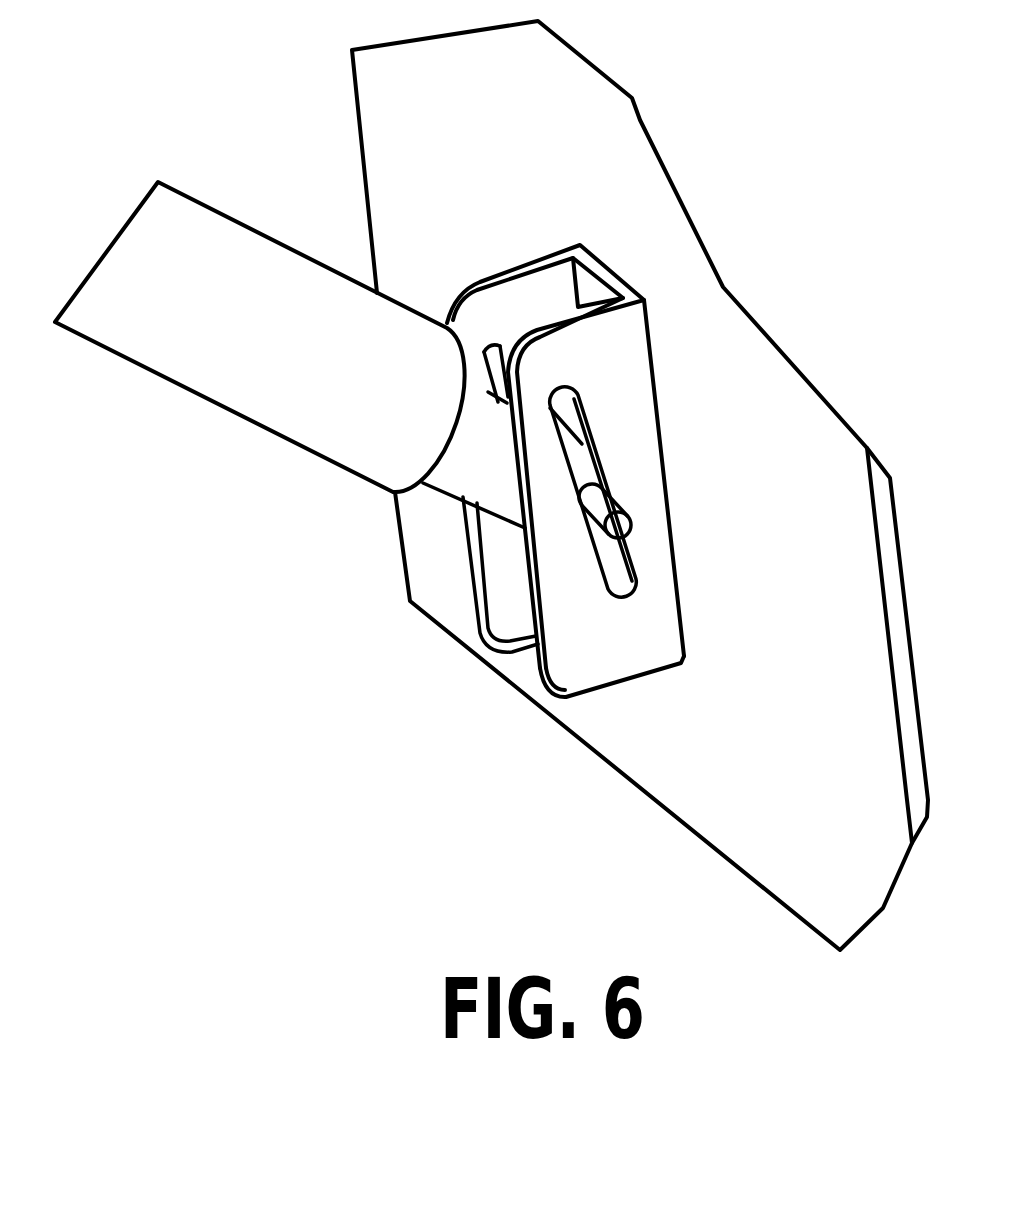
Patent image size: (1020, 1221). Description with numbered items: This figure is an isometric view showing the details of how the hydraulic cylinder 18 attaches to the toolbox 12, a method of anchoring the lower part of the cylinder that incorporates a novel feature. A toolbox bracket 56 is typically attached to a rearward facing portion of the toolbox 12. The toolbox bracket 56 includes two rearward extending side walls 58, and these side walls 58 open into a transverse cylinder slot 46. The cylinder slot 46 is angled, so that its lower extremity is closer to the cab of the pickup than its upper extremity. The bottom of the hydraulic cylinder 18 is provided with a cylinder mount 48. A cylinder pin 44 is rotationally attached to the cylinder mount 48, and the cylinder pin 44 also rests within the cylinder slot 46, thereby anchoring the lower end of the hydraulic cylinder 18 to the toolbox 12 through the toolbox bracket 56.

The toolbox 12 is at (572, 170).
The hydraulic cylinder 18 is at (277, 265).
The cylinder pin 44 is at (630, 515).
The cylinder slot 46 is at (592, 427).
The cylinder mount 48 is at (472, 482).
The toolbox bracket 56 is at (618, 270).
The side walls 58 is at (572, 665).